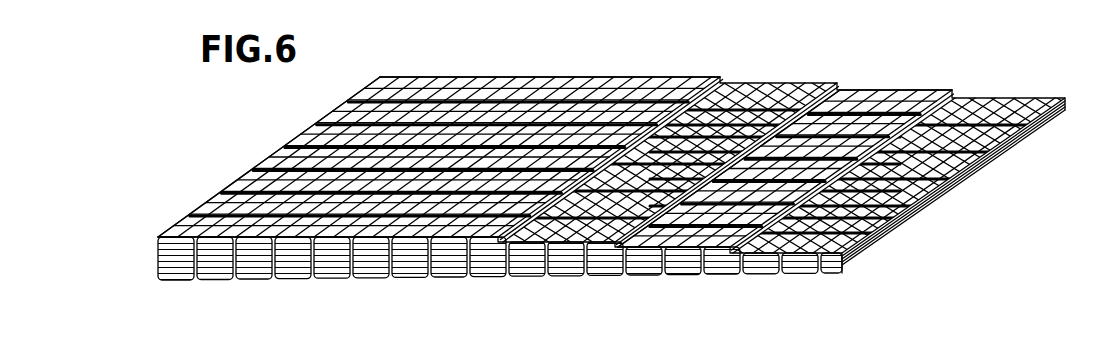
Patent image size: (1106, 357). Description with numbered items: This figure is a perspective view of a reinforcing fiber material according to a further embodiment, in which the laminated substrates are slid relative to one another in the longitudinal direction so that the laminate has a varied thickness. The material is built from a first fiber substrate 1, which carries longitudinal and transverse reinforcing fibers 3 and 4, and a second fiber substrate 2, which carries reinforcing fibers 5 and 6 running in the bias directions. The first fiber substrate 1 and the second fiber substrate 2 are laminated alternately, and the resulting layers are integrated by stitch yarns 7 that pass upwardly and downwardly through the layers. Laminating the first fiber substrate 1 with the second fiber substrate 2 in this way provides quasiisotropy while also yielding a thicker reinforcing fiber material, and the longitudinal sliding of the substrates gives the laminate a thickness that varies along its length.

The first fiber substrate 1 is at (603, 73).
The second fiber substrate 2 is at (786, 78).
The longitudinal reinforcing fibers 3 is at (487, 97).
The transverse reinforcing fibers 4 is at (463, 93).
The bias-direction reinforcing fibers 5 is at (738, 83).
The bias-direction reinforcing fibers 6 is at (764, 87).
The stitch yarns 7 is at (427, 102).